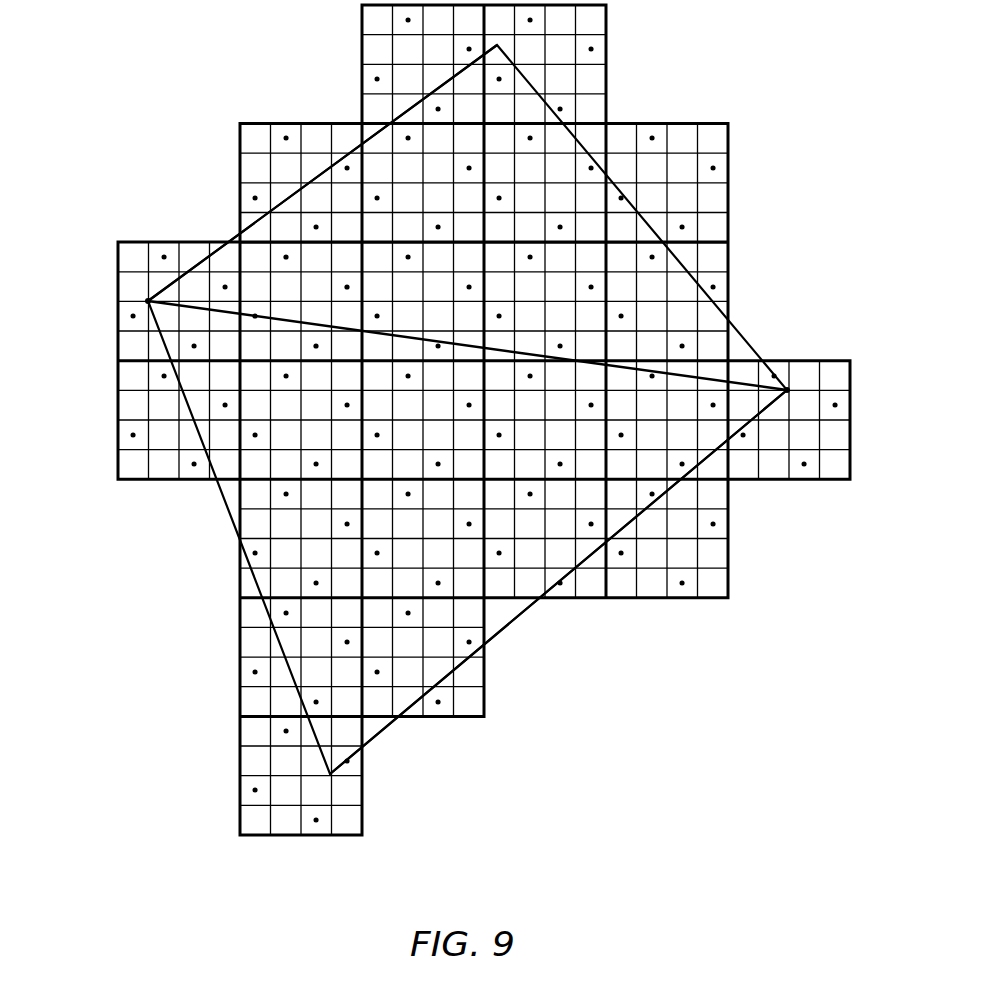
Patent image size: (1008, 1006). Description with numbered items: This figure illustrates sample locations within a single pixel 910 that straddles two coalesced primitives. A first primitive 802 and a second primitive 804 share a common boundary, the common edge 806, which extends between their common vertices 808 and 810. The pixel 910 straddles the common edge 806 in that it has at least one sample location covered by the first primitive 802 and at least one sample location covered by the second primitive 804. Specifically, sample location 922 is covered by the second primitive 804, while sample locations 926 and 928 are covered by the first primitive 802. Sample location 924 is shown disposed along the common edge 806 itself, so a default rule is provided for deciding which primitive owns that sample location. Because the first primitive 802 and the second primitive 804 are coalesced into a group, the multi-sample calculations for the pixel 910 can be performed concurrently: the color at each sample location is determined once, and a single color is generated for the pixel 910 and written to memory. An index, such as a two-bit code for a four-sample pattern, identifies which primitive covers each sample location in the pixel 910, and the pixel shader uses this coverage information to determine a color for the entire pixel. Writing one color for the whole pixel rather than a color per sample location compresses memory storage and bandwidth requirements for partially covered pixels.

The first primitive 802 is at (683, 260).
The second primitive 804 is at (512, 620).
The common edge 806 is at (190, 307).
The common vertex 808 is at (148, 301).
The common vertex 810 is at (787, 390).
The pixel 910 is at (257, 222).
The sample location 922 is at (316, 346).
The sample location 924 is at (255, 316).
The sample location 926 is at (347, 287).
The sample location 928 is at (286, 257).